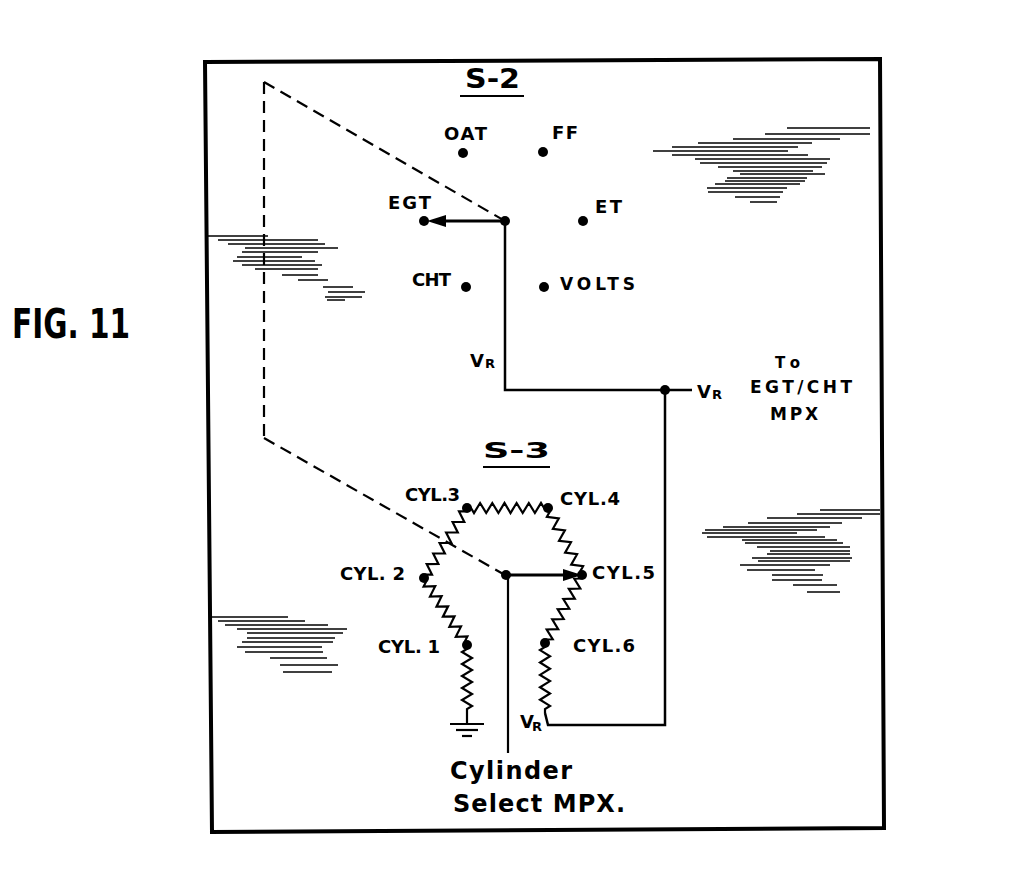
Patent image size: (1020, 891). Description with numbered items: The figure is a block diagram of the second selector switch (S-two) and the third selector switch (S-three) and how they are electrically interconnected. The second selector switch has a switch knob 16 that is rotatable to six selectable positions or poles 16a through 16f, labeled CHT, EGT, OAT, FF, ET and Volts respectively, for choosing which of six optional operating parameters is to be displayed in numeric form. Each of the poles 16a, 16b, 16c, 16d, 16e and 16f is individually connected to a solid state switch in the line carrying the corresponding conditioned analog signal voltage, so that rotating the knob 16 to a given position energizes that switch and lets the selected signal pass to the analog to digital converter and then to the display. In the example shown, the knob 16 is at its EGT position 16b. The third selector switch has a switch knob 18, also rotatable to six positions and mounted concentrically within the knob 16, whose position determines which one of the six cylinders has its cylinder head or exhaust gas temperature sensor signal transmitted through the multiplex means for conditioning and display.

The switch knob 16 is at (486, 223).
The CHT pole 16a is at (463, 291).
The EGT pole 16b is at (422, 226).
The OAT pole 16c is at (467, 157).
The FF pole 16d is at (547, 155).
The ET pole 16e is at (585, 226).
The Volts pole 16f is at (546, 292).
The switch knob 18 is at (539, 572).